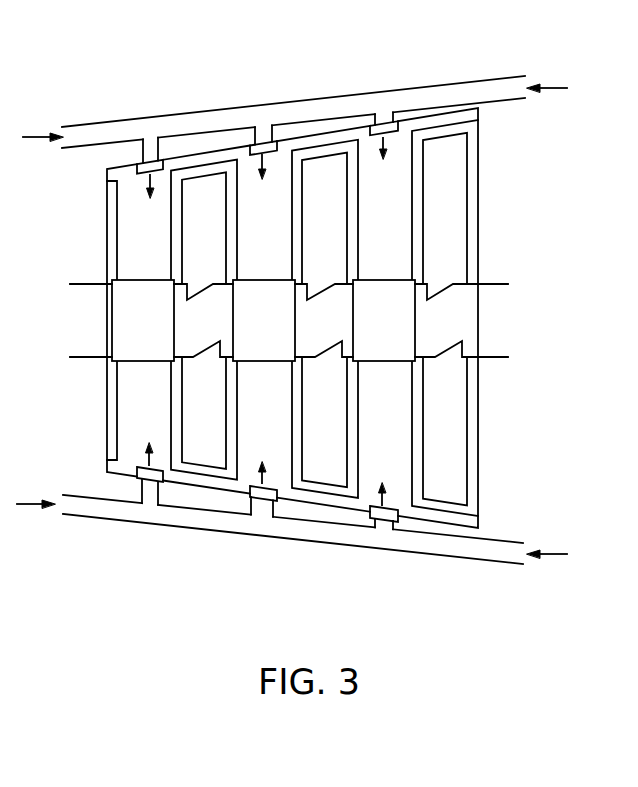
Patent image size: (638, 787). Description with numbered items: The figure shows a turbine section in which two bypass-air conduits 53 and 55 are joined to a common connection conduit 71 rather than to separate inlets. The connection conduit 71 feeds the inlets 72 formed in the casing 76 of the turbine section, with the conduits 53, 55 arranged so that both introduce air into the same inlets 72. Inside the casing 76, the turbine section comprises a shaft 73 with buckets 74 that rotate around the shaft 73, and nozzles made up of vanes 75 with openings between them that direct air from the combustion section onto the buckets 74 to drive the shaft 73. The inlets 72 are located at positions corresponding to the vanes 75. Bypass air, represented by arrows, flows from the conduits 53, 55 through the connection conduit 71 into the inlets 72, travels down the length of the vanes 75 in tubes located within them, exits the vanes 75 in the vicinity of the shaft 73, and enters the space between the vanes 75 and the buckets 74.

The conduit 53 is at (97, 132).
The conduit 55 is at (504, 92).
The connection conduit 71 is at (330, 108).
The inlets 72 is at (263, 145).
The shaft 73 is at (193, 310).
The buckets 74 is at (192, 403).
The vanes 75 is at (132, 213).
The casing 76 is at (208, 162).